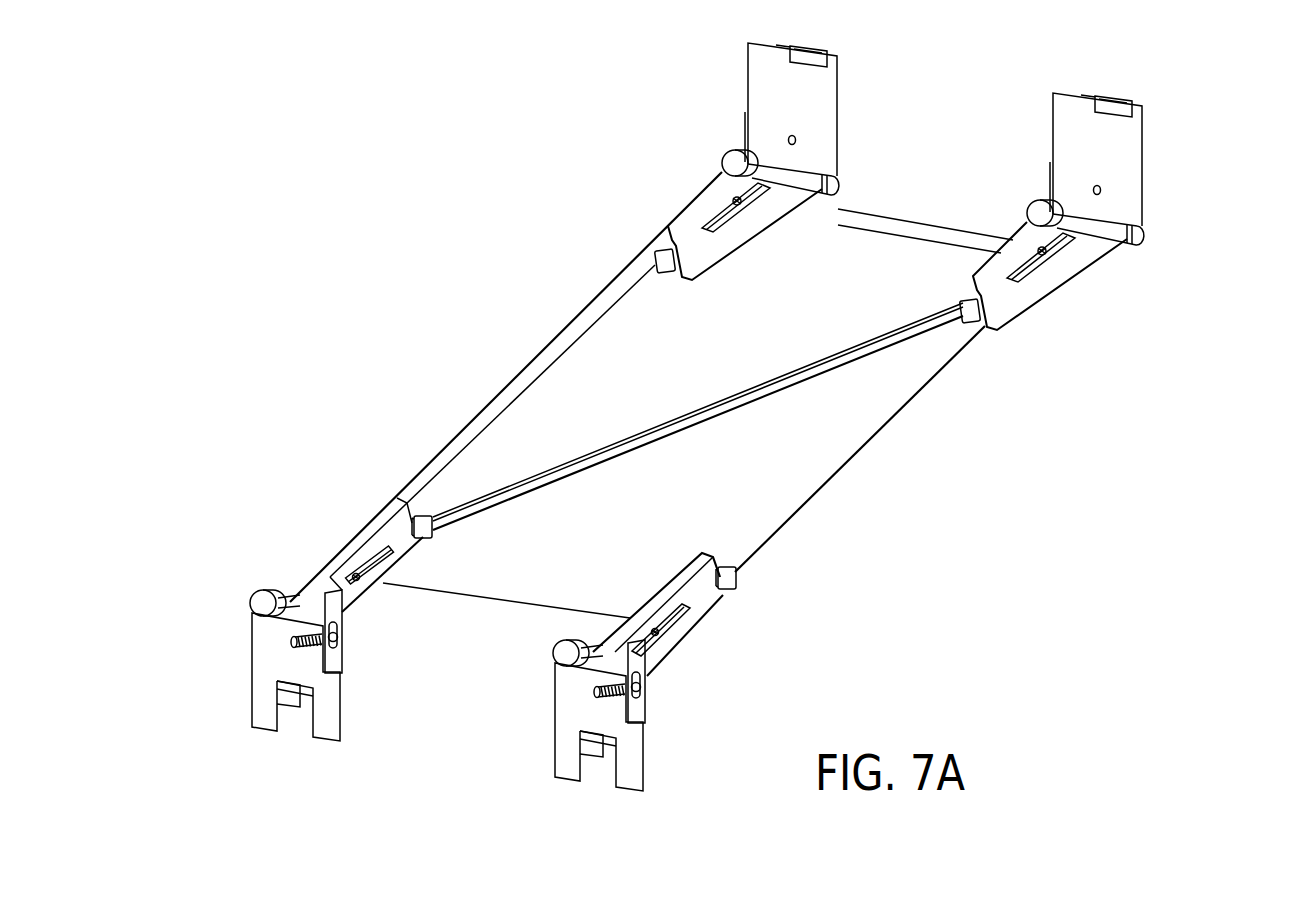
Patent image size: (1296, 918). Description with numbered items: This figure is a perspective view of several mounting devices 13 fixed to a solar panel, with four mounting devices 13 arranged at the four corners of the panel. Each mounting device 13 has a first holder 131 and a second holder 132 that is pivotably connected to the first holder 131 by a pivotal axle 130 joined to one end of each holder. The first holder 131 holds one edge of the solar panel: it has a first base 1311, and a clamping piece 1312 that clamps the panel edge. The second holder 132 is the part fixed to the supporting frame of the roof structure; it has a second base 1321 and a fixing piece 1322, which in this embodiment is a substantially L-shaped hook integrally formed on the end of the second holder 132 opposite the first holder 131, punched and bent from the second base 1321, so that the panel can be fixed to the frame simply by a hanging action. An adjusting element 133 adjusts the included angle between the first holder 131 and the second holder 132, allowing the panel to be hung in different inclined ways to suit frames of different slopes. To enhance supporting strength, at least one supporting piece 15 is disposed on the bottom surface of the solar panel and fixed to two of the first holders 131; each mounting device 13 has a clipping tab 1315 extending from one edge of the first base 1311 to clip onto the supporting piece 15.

The mounting device 13 is at (160, 546).
The supporting piece 15 is at (648, 443).
The pivotal axle 130 is at (258, 603).
The first holder 131 is at (246, 668).
The second holder 132 is at (298, 568).
The adjusting element 133 is at (310, 658).
The first base 1311 is at (373, 588).
The clamping piece 1312 is at (350, 577).
The clipping tab 1315 is at (430, 536).
The second base 1321 is at (263, 722).
The fixing piece 1322 is at (288, 706).